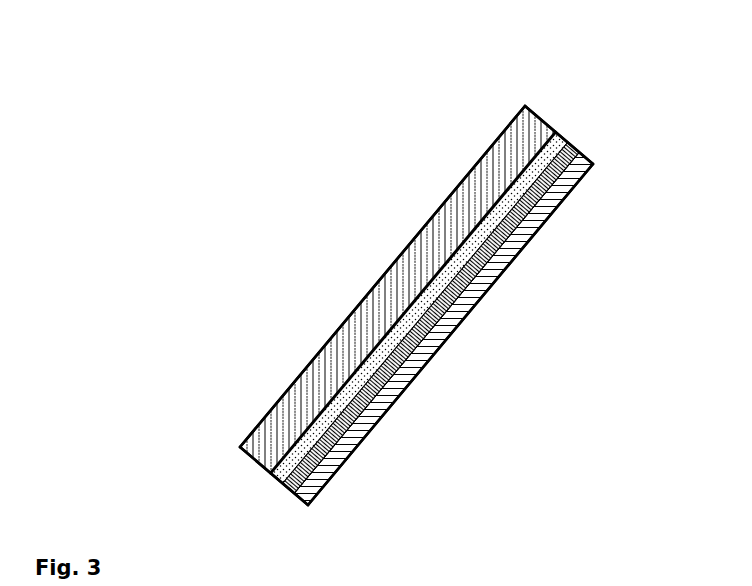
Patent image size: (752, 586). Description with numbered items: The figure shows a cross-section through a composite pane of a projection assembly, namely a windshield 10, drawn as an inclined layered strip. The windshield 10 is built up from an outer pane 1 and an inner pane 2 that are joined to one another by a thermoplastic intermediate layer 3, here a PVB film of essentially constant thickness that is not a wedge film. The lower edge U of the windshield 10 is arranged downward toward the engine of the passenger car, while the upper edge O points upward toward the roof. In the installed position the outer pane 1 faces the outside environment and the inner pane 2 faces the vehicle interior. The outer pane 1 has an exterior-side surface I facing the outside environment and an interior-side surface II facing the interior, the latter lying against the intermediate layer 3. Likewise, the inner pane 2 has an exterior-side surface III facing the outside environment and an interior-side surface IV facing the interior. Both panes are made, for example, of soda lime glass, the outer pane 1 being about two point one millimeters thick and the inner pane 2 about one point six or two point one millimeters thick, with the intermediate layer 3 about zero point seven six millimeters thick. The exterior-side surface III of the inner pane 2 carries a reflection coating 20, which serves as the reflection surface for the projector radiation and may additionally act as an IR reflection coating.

The outer pane 1 is at (475, 190).
The inner pane 2 is at (587, 160).
The thermoplastic intermediate layer 3 is at (563, 138).
The reflection coating 20 is at (573, 150).
The windshield 10 is at (302, 217).
The upper edge O is at (545, 112).
The lower edge U is at (270, 478).
The exterior-side surface of the outer pane I is at (293, 377).
The interior-side surface of the outer pane II is at (287, 445).
The exterior-side surface of the inner pane III is at (413, 357).
The interior-side surface of the inner pane IV is at (393, 412).